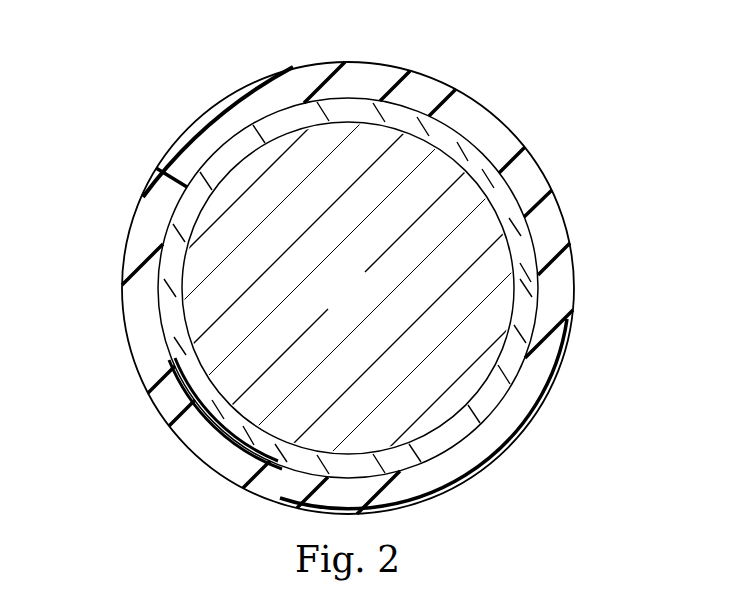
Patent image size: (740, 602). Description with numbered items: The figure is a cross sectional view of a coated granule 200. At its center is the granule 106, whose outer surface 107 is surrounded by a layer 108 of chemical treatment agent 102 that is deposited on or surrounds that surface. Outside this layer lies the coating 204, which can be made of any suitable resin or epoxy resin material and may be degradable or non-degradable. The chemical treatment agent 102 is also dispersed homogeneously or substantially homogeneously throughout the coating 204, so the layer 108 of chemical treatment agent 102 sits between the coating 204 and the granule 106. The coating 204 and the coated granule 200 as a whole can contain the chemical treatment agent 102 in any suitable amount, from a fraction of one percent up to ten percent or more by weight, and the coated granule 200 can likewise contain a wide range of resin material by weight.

The coated granule 200 is at (485, 64).
The coating 204 is at (293, 74).
The outer surface 107 is at (567, 319).
The chemical treatment agent 102 is at (540, 372).
The layer 108 is at (190, 448).
The granule 106 is at (370, 304).